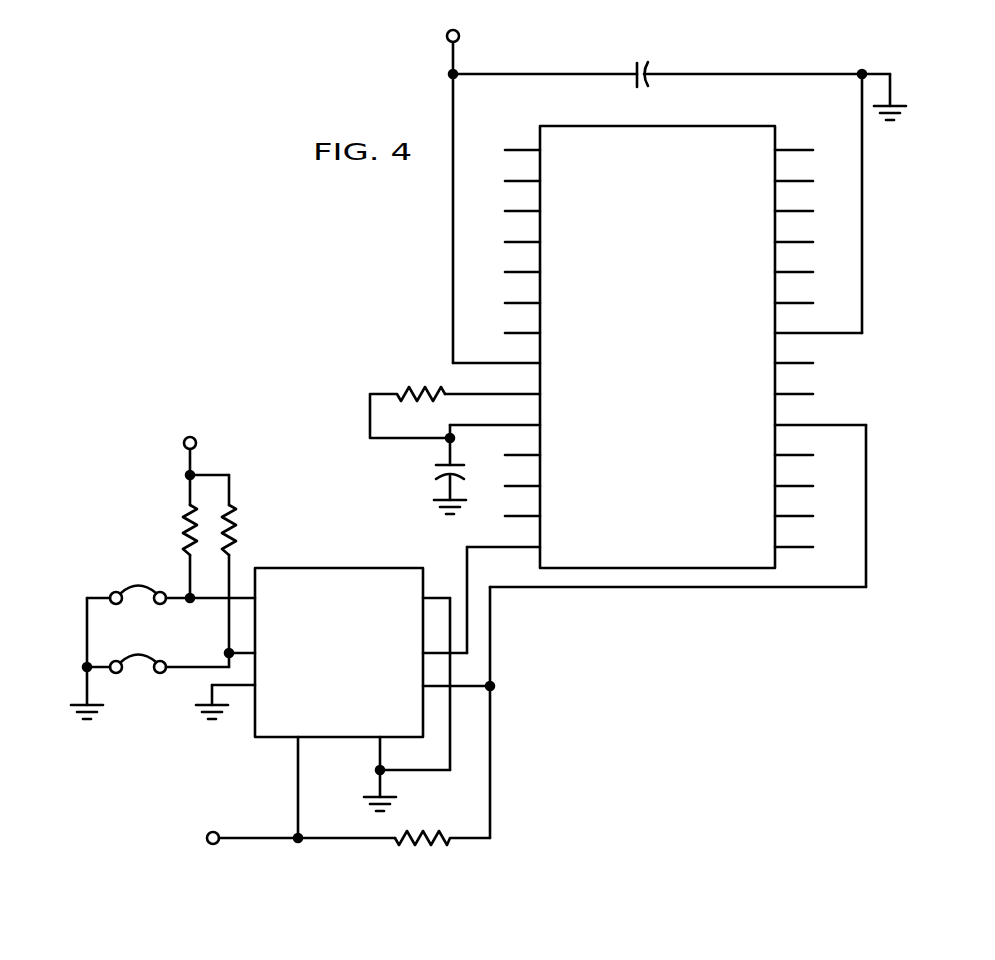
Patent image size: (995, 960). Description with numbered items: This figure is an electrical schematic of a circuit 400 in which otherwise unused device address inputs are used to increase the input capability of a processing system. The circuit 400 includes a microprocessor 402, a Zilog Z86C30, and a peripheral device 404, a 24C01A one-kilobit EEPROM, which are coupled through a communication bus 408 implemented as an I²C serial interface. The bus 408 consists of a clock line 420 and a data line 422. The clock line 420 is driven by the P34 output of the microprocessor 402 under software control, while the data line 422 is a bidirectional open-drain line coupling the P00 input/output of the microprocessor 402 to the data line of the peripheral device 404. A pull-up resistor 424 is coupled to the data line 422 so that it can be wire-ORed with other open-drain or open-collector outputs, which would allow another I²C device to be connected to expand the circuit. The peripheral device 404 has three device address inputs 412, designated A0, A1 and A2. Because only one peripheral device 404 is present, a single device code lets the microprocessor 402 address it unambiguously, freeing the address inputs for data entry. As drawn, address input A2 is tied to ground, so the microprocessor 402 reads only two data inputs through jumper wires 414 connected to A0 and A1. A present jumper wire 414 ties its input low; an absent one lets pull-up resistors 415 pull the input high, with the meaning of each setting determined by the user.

The circuit 400 is at (277, 311).
The microprocessor 402 is at (665, 126).
The peripheral device 404 is at (366, 567).
The communication bus 408 is at (540, 635).
The device address inputs 412 is at (276, 563).
The jumper wires 414 is at (130, 652).
The pull-up resistors 415 is at (229, 512).
The clock line 420 is at (463, 576).
The data line 422 is at (803, 590).
The pull-up resistor 424 is at (417, 828).